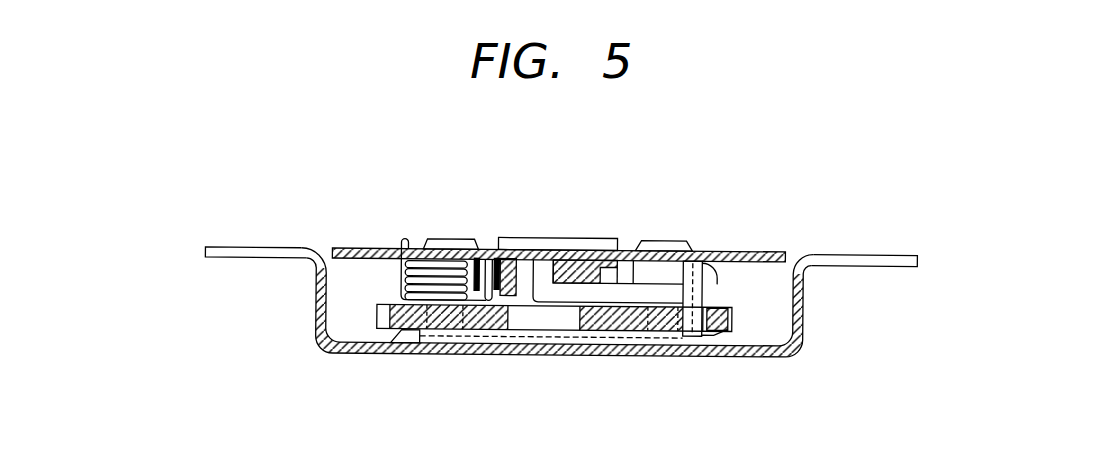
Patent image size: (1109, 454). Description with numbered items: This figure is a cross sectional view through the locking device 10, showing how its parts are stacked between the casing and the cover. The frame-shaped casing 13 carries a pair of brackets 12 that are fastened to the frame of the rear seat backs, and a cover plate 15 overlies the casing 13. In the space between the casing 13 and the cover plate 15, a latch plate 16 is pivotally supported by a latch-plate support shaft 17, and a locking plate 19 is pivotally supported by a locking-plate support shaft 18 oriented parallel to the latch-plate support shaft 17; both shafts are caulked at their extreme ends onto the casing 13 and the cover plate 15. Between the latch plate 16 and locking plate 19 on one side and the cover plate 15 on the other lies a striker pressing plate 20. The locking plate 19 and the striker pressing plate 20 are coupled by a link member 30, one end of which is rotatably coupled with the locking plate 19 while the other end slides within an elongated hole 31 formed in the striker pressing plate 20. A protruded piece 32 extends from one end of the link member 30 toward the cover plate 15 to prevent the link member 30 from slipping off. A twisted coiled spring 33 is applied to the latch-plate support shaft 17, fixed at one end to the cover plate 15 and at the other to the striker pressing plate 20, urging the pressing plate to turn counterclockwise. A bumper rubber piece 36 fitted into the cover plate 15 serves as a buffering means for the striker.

The electronic apparatus 10 is at (907, 282).
The bracket 12 is at (222, 247).
The casing 13 is at (803, 320).
The cover plate 15 is at (754, 250).
The latch plate 16 is at (420, 322).
The latch-plate support shaft 17 is at (457, 241).
The locking-plate support shaft 18 is at (673, 239).
The locking plate 19 is at (602, 323).
The striker pressing plate 20 is at (588, 273).
The link member 30 is at (620, 290).
The elongated hole 31 is at (516, 278).
The protruded piece 32 is at (698, 270).
The coiled spring 33 is at (416, 264).
The bumper rubber piece 36 is at (564, 241).